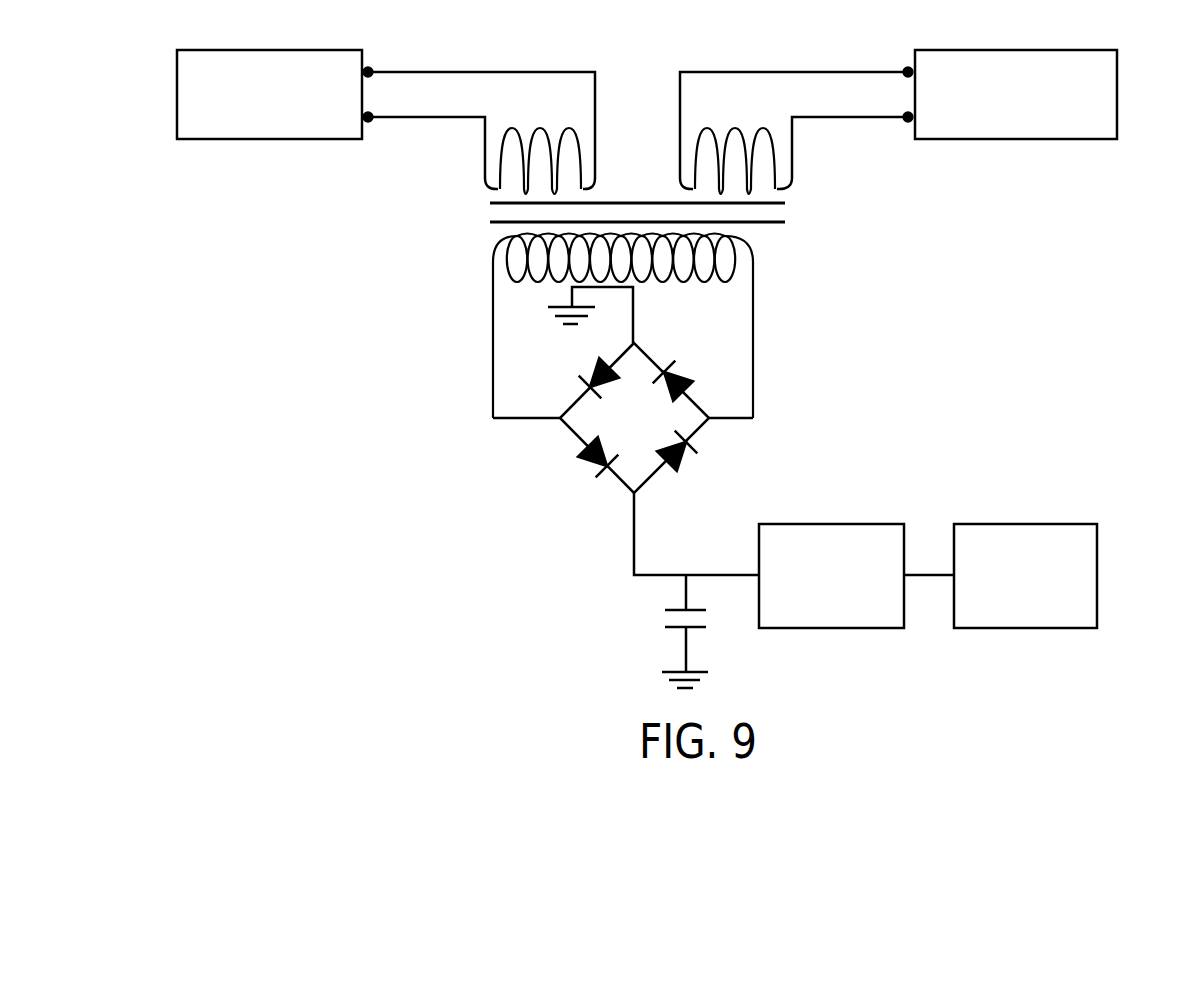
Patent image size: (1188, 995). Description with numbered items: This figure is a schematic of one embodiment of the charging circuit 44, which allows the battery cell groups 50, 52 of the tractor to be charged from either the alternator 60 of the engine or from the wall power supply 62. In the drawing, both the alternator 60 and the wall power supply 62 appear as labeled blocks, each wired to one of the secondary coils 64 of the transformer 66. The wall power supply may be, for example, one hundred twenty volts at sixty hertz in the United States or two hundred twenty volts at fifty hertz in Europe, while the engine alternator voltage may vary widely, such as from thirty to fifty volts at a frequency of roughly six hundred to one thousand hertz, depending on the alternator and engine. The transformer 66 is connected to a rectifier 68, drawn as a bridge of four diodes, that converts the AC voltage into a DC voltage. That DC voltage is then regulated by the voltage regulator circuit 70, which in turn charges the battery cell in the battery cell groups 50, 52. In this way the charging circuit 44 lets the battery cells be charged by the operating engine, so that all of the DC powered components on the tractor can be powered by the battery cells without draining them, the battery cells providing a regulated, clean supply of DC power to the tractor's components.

The charging circuit 44 is at (453, 514).
The battery cell group 50 is at (1045, 597).
The battery cell group 52 is at (1027, 628).
The alternator 60 is at (270, 139).
The wall power supply 62 is at (1015, 139).
The secondary coils 64 is at (510, 128).
The transformer 66 is at (782, 212).
The rectifier 68 is at (623, 483).
The voltage regulator circuit 70 is at (830, 628).